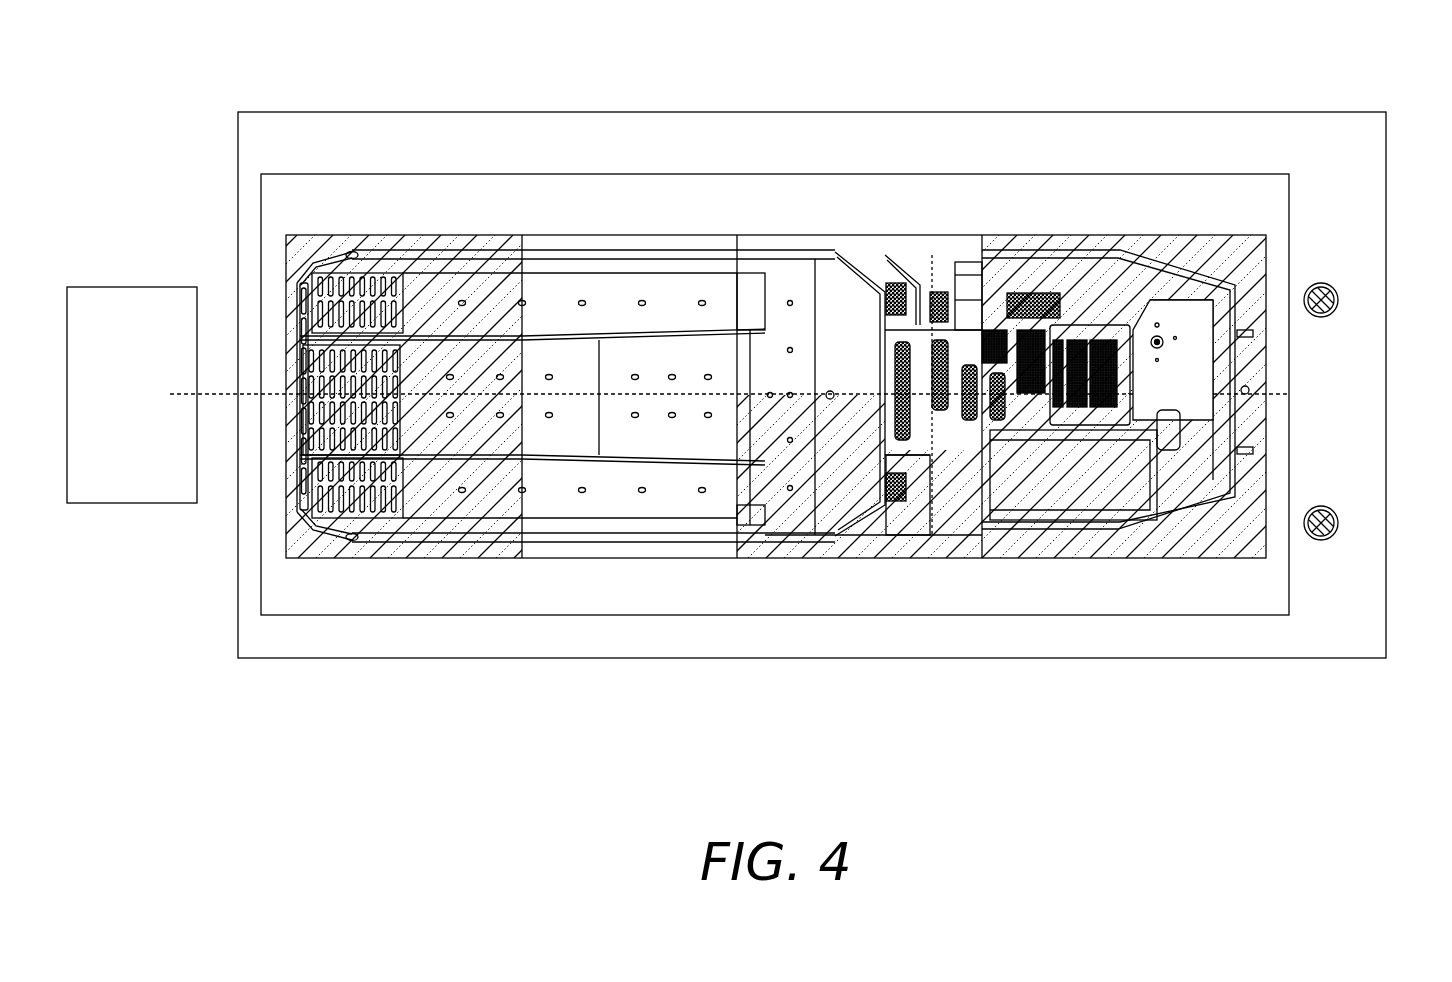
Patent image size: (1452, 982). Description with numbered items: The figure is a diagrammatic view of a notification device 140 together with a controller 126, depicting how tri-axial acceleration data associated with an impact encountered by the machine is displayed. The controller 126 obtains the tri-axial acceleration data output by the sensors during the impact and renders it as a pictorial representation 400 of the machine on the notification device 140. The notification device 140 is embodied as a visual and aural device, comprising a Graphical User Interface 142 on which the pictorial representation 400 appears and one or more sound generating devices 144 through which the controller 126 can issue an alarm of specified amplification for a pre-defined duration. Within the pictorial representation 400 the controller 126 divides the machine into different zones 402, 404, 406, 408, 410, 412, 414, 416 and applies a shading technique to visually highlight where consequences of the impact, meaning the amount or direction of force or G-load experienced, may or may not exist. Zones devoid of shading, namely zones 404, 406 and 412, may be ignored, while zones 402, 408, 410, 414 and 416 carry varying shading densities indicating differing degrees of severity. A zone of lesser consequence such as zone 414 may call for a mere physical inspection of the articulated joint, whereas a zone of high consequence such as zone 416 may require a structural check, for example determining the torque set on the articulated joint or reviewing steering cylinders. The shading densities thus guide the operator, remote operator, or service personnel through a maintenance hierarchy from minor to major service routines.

The controller 126 is at (148, 409).
The notification device 140 is at (430, 112).
The Graphical User Interface (GUI) 142 is at (323, 174).
The sound generating devices 144 is at (1338, 300).
The pictorial representation 400 is at (718, 228).
The zone 402 is at (293, 265).
The zone 404 is at (611, 235).
The zone 406 is at (878, 235).
The zone 408 is at (1128, 235).
The zone 410 is at (293, 522).
The zone 412 is at (577, 558).
The zone 414 is at (845, 558).
The zone 416 is at (1095, 558).